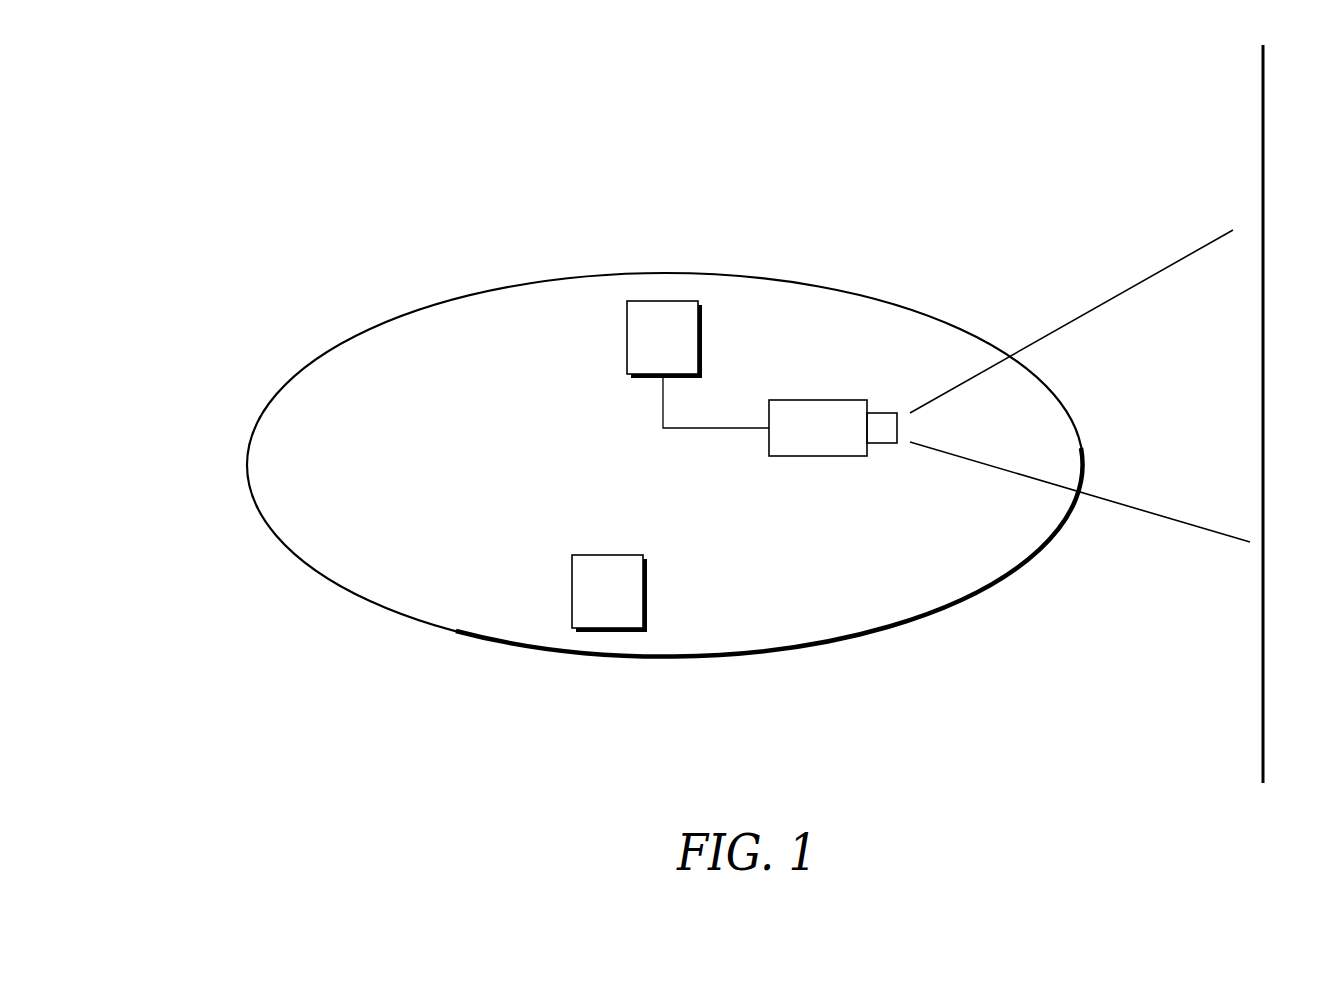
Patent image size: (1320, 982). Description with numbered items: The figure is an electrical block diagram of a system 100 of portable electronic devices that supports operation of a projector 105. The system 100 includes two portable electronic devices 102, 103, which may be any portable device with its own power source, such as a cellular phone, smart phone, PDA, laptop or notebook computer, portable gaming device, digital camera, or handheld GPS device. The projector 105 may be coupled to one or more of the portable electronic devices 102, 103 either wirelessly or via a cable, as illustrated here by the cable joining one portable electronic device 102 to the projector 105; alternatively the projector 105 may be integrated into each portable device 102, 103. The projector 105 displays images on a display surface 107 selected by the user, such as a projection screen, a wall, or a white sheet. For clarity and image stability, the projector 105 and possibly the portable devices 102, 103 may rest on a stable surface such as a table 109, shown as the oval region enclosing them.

The system 100 is at (142, 99).
The portable electronic device 102 is at (627, 334).
The portable electronic device 103 is at (572, 592).
The projector 105 is at (819, 400).
The display surface 107 is at (1262, 112).
The table 109 is at (675, 273).